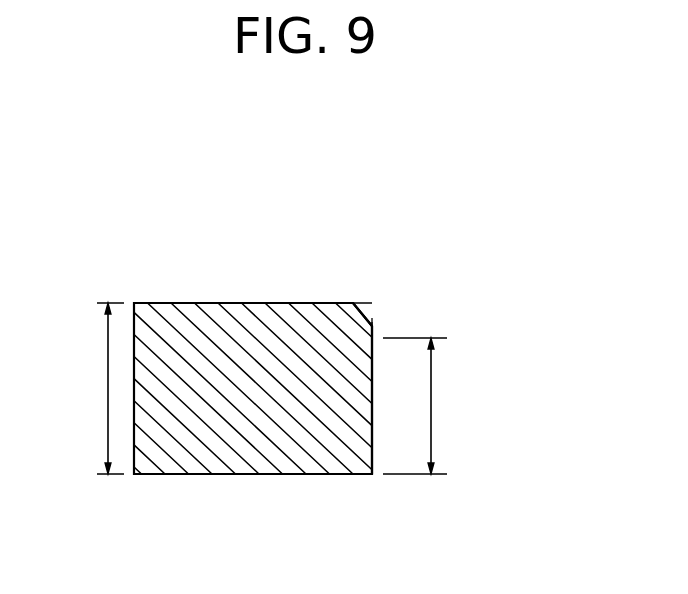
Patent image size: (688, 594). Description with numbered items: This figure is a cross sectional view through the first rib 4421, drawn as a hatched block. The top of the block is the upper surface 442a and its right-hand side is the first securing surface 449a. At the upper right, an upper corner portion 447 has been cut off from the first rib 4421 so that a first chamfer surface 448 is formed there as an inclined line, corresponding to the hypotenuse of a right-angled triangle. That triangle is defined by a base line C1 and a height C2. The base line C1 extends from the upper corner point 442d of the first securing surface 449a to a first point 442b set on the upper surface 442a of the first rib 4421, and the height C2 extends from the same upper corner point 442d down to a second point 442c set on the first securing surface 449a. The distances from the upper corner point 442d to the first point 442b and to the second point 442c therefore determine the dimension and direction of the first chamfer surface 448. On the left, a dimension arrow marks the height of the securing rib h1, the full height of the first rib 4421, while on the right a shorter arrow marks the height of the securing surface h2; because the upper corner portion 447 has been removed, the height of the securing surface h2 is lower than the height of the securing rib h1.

The first rib 4421 is at (195, 474).
The upper surface 442a is at (158, 302).
The first point 442b is at (350, 303).
The second point 442c is at (374, 338).
The upper corner point 442d is at (372, 318).
The upper corner portion 447 is at (373, 311).
The first chamfer surface 448 is at (374, 313).
The first securing surface 449a is at (372, 440).
The base line C1 is at (366, 318).
The height C2 is at (374, 317).
The height of the securing rib h1 is at (95, 388).
The height of the securing surface h2 is at (427, 406).